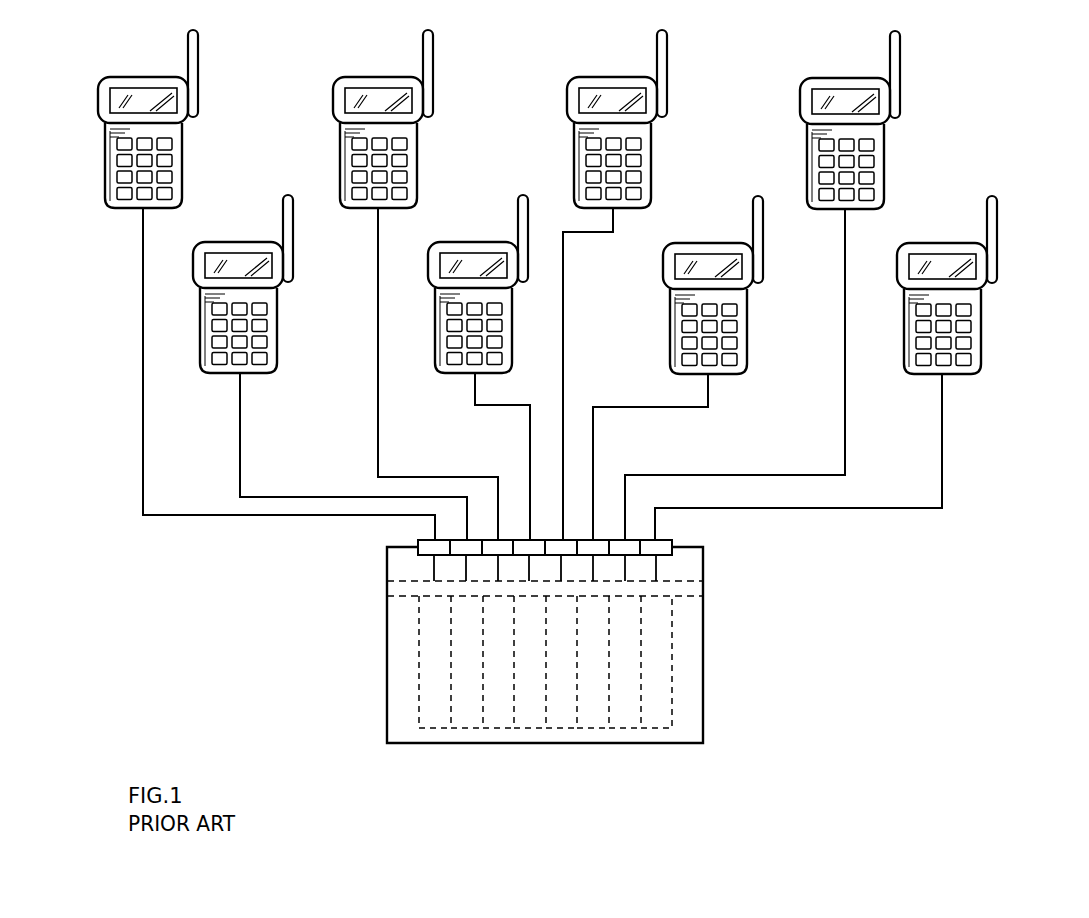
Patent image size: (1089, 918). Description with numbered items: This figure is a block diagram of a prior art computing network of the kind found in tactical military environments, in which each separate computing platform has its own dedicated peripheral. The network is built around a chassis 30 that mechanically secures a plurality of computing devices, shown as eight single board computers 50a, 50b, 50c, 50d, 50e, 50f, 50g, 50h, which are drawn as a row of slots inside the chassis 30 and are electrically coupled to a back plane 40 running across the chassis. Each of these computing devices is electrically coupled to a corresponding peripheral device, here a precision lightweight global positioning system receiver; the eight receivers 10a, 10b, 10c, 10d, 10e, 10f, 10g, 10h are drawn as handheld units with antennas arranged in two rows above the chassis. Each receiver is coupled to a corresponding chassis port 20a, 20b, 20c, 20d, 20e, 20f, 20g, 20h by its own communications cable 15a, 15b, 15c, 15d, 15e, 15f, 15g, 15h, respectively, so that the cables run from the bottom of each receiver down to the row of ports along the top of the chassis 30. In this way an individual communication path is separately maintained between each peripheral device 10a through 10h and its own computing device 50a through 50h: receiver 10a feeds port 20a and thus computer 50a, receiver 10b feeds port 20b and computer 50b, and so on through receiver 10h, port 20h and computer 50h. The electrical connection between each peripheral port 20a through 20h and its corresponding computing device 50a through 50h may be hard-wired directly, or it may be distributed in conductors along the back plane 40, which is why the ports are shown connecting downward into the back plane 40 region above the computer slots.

The precision lightweight global positioning system receiver 10a is at (198, 79).
The precision lightweight global positioning system receiver 10b is at (295, 258).
The precision lightweight global positioning system receiver 10c is at (435, 78).
The precision lightweight global positioning system receiver 10d is at (459, 242).
The precision lightweight global positioning system receiver 10e is at (668, 84).
The precision lightweight global positioning system receiver 10f is at (763, 262).
The precision lightweight global positioning system receiver 10g is at (900, 79).
The precision lightweight global positioning system receiver 10h is at (997, 263).
The communications cable 15a is at (143, 402).
The communications cable 15b is at (240, 448).
The communications cable 15c is at (378, 395).
The communications cable 15d is at (470, 399).
The communications cable 15e is at (563, 350).
The communications cable 15f is at (593, 452).
The communications cable 15g is at (707, 474).
The communications cable 15h is at (942, 446).
The chassis port 20a is at (425, 541).
The chassis port 20b is at (460, 547).
The chassis port 20c is at (493, 547).
The chassis port 20d is at (523, 547).
The chassis port 20e is at (555, 547).
The chassis port 20f is at (586, 547).
The chassis port 20g is at (630, 547).
The chassis port 20h is at (665, 541).
The chassis 30 is at (387, 676).
The back plane 40 is at (693, 588).
The single board computer 50a is at (437, 714).
The single board computer 50b is at (467, 713).
The single board computer 50c is at (501, 714).
The single board computer 50d is at (533, 713).
The single board computer 50e is at (563, 714).
The single board computer 50f is at (596, 713).
The single board computer 50g is at (627, 714).
The single board computer 50h is at (663, 713).